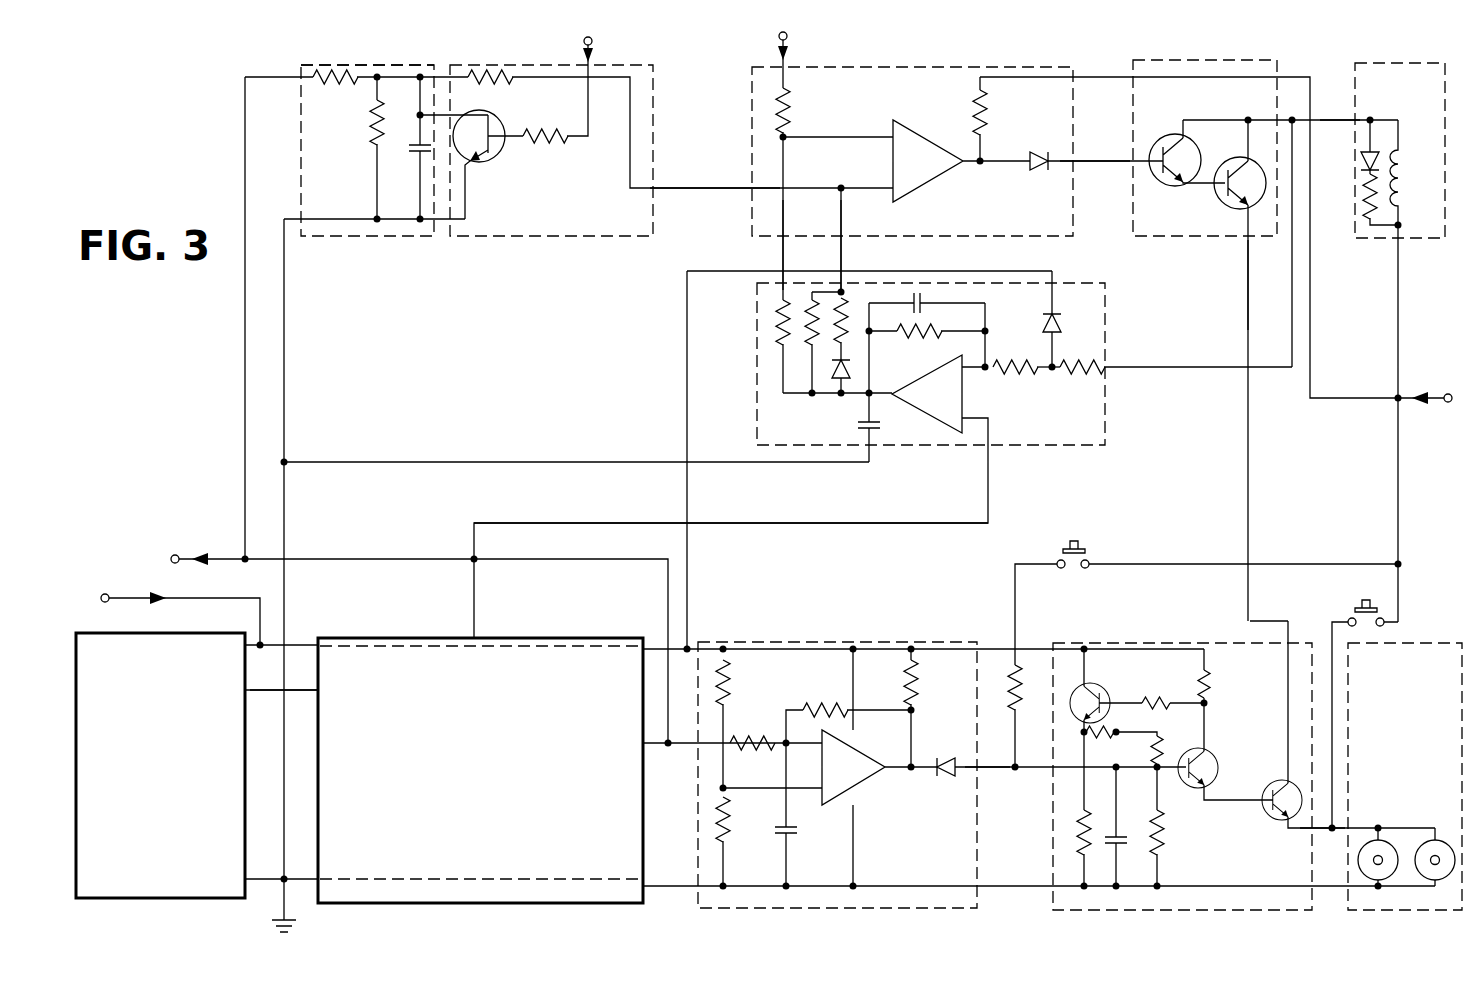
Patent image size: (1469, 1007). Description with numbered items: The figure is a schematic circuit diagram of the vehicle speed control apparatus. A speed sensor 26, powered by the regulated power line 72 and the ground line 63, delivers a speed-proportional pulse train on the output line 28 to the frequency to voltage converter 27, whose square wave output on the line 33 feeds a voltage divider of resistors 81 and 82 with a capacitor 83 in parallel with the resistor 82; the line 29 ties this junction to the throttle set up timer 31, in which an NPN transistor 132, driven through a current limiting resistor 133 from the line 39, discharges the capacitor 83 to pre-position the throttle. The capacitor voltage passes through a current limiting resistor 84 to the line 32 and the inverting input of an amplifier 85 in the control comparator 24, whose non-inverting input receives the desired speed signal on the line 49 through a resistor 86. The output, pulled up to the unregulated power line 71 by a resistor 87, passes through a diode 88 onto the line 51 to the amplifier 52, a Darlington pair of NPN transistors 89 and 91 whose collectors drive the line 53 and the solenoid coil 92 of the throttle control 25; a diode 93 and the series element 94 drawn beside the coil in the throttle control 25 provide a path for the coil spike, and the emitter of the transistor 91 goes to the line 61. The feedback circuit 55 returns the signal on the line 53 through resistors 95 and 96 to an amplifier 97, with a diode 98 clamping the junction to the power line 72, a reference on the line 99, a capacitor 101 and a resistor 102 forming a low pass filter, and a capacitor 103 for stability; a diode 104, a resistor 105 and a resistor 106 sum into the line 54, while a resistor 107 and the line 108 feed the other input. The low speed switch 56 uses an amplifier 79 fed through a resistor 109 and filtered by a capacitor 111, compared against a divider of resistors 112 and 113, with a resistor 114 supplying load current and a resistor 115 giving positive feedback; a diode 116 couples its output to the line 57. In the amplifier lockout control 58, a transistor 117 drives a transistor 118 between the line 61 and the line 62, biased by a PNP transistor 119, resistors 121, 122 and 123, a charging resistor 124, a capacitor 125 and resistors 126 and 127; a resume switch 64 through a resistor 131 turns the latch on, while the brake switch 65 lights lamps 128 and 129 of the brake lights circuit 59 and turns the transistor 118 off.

The control comparator 24 is at (744, 100).
The throttle control 25 is at (1382, 243).
The speed sensor 26 is at (155, 634).
The frequency to voltage converter 27 is at (368, 243).
The output line 28 is at (297, 694).
The line 29 is at (444, 70).
The throttle set up timer 31 is at (526, 244).
The line 32 is at (720, 192).
The line 33 is at (224, 554).
The line 39 is at (594, 42).
The line 49 is at (790, 41).
The line 51 is at (1098, 170).
The amplifier 52 is at (1191, 241).
The line 53 is at (1345, 118).
The line 54 is at (845, 252).
The feedback circuit 55 is at (1110, 402).
The low speed switch 56 is at (798, 634).
The line 57 is at (998, 776).
The amplifier lockout control 58 is at (1150, 637).
The brake lights circuit 59 is at (1417, 639).
The line 61 is at (1246, 290).
The line 62 is at (1320, 836).
The ground line 63 is at (290, 905).
The resume switch 64 is at (1085, 540).
The brake switch 65 is at (1358, 600).
The power line 71 is at (1450, 378).
The power line 72 is at (130, 594).
The amplifier 79 is at (870, 780).
The resistor 81 is at (344, 90).
The resistor 82 is at (372, 136).
The capacitor 83 is at (417, 158).
The current limiting resistor 84 is at (505, 86).
The amplifier 85 is at (940, 178).
The resistor 86 is at (792, 104).
The resistor 87 is at (990, 108).
The diode 88 is at (1045, 172).
The NPN transistor 89 is at (1172, 190).
The NPN transistor 91 is at (1226, 206).
The solenoid coil 92 is at (1405, 150).
The diode 93 is at (1362, 160).
The resistor 94 is at (1362, 195).
The resistor 95 is at (1085, 380).
The resistor 96 is at (1020, 380).
The amplifier 97 is at (930, 418).
The diode 98 is at (1056, 308).
The line 99 is at (925, 526).
The capacitor 101 is at (925, 301).
The resistor 102 is at (928, 332).
The capacitor 103 is at (858, 422).
The diode 104 is at (855, 352).
The resistor 105 is at (848, 310).
The resistor 106 is at (805, 340).
The resistor 107 is at (778, 322).
The line 108 is at (780, 252).
The resistor 109 is at (770, 738).
The capacitor 111 is at (797, 828).
The resistor 112 is at (733, 680).
The resistor 113 is at (732, 830).
The resistor 114 is at (920, 685).
The resistor 115 is at (835, 705).
The diode 116 is at (948, 780).
The NPN transistor 117 is at (1212, 761).
The NPN transistor 118 is at (1271, 818).
The PNP transistor 119 is at (1093, 691).
The resistor 121 is at (1090, 818).
The resistor 122 is at (1147, 700).
The resistor 123 is at (1212, 688).
The charging resistor 124 is at (1110, 730).
The capacitor 125 is at (1122, 830).
The resistor 126 is at (1163, 750).
The resistor 127 is at (1165, 824).
The lamp 128 is at (1392, 843).
The lamp 129 is at (1446, 843).
The current limiting resistor 131 is at (1018, 690).
The NPN transistor 132 is at (490, 162).
The current limiting resistor 133 is at (561, 146).